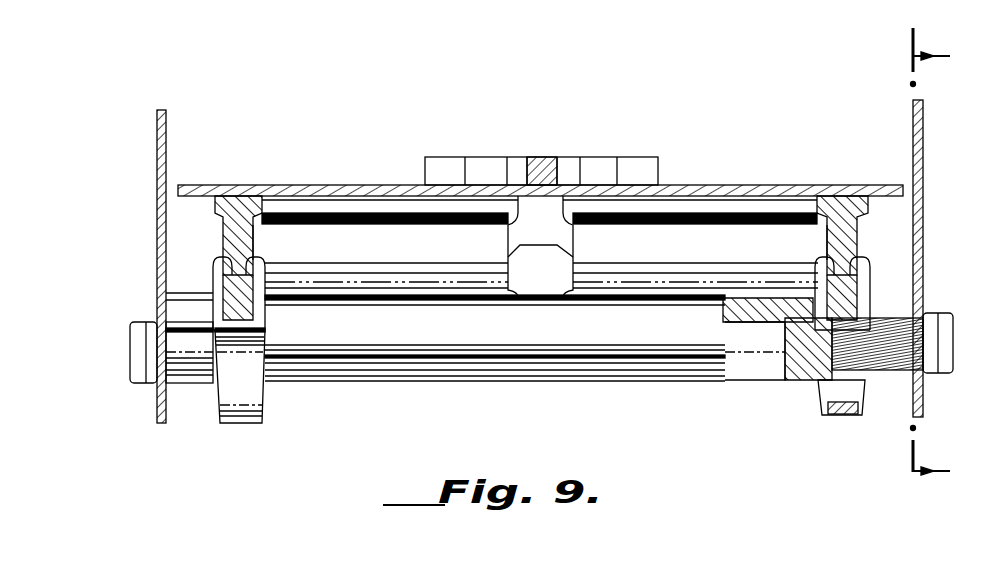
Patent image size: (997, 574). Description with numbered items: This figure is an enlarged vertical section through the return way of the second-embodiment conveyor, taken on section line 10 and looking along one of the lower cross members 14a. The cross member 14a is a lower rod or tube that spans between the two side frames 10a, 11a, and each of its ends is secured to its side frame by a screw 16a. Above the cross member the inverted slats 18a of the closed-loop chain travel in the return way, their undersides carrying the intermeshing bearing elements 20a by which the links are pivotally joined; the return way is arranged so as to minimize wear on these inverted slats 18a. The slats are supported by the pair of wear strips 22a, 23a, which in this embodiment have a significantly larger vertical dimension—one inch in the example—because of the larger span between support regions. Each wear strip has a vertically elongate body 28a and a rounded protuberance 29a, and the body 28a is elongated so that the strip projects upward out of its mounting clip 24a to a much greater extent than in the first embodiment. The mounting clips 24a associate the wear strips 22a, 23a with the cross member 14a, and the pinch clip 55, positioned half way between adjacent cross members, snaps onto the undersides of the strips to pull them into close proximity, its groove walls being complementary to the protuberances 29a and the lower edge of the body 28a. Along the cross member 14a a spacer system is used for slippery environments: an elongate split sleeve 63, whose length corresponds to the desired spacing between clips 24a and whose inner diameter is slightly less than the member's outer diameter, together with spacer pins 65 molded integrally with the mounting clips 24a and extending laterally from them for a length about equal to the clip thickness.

The section line 10- 10 is at (943, 261).
The side frame 10a is at (924, 158).
The side frame 11a is at (157, 195).
The lower cross member 14a is at (200, 385).
The screw 16a is at (143, 383).
The inverted slat 18a is at (740, 185).
The bearing element 20a is at (597, 157).
The wear strip 22a is at (868, 228).
The wear strip 23a is at (222, 240).
The mounting clip 24a is at (266, 415).
The body of wear strip 28a is at (255, 246).
The rounded protuberance 29a is at (265, 278).
The pinch clip 55 is at (512, 258).
The split sleeve 63 is at (500, 378).
The spacer pin 65 is at (212, 303).